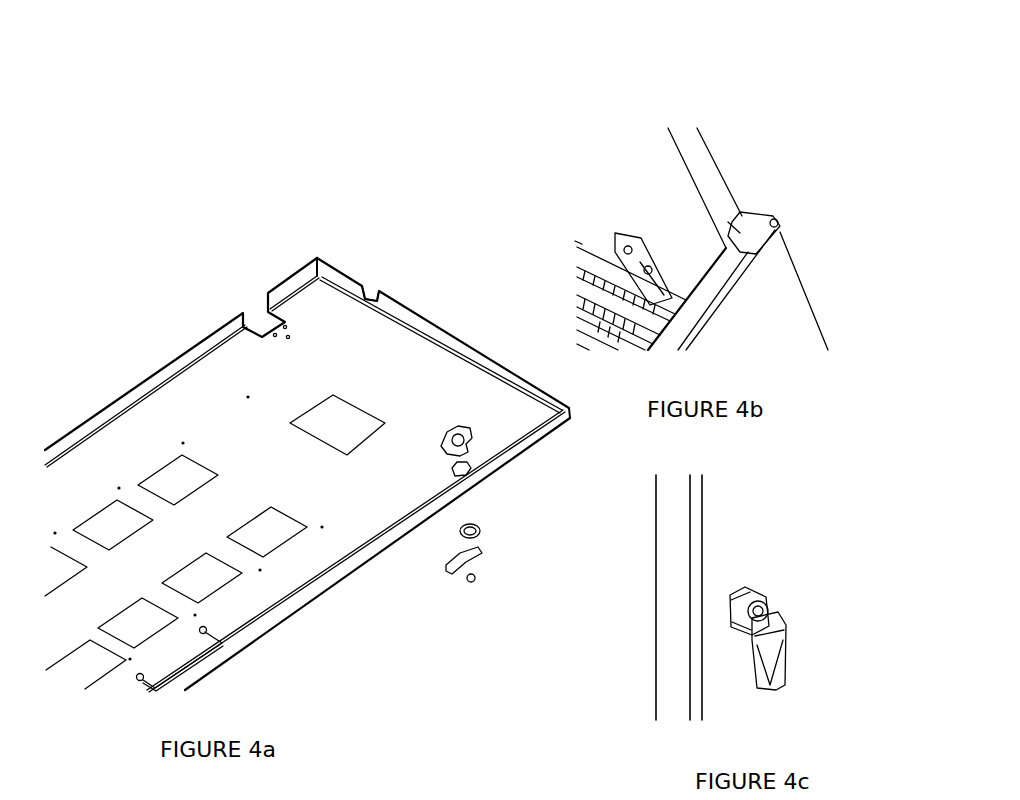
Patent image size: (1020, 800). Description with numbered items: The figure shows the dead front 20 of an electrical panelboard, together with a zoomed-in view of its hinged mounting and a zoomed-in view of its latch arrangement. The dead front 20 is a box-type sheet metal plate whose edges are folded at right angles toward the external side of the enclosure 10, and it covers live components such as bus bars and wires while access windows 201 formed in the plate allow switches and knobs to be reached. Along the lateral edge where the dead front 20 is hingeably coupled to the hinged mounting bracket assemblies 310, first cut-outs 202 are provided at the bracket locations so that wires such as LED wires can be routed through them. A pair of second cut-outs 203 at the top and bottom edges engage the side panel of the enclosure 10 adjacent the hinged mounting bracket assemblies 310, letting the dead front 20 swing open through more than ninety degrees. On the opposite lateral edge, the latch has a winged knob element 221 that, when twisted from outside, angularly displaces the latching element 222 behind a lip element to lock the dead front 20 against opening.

In FIG. 4A, the dead front 20 is at (258, 256).
In FIG. 4B, the dead front 20 is at (707, 162).
In FIG. 4C, the dead front 20 is at (656, 558).
In FIG. 4B, the enclosure 10 is at (790, 241).
In FIG. 4A, the access windows 201 is at (349, 418).
In FIG. 4A, the first cut-outs 202 is at (259, 318).
In FIG. 4A, the second cut-outs 203 is at (371, 293).
In FIG. 4A, the winged knob element 221 is at (467, 450).
In FIG. 4A, the latching element 222 is at (472, 557).
In FIG. 4C, the latching element 222 is at (753, 665).
In FIG. 4B, the hinged mounting bracket assemblies 310 is at (664, 295).